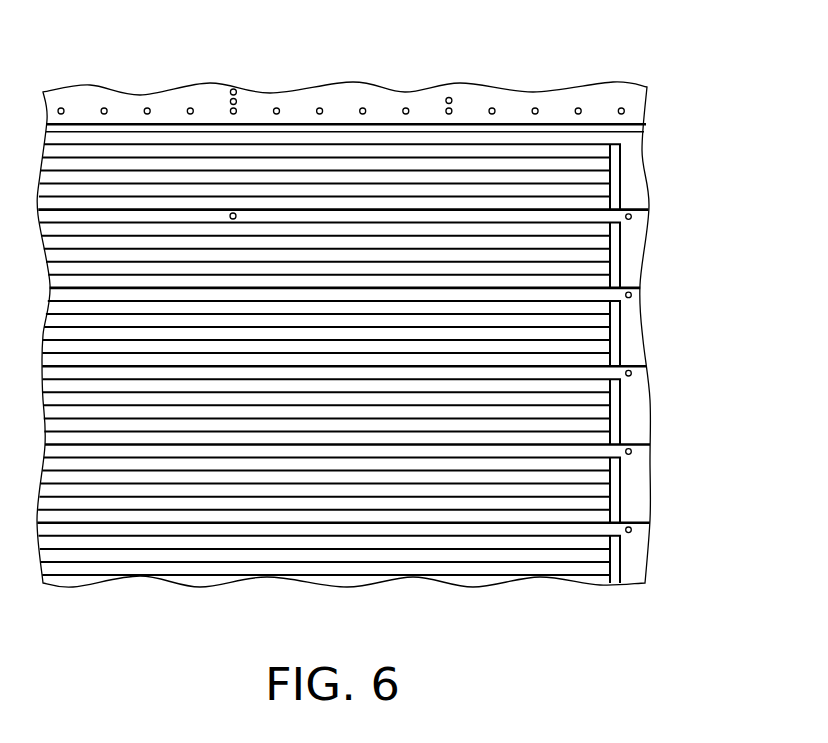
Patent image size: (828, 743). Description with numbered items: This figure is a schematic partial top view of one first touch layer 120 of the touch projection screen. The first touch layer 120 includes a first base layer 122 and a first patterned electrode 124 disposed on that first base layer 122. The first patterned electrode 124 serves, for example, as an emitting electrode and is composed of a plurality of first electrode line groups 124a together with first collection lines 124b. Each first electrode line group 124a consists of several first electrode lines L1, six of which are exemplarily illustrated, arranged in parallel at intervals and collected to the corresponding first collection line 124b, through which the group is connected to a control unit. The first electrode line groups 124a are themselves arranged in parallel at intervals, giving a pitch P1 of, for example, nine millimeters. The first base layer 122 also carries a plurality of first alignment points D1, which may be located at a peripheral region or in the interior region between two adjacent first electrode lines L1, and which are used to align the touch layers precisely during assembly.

The first touch layer 120 is at (718, 651).
The first base layer 122 is at (598, 103).
The first patterned electrode 124 is at (432, 126).
The first electrode line group 124a is at (628, 379).
The first collection line 124b is at (634, 452).
The first alignment point D1 is at (232, 212).
The pitch of the first electrode line groups P1 is at (674, 208).
The first electrode line L1 is at (573, 377).